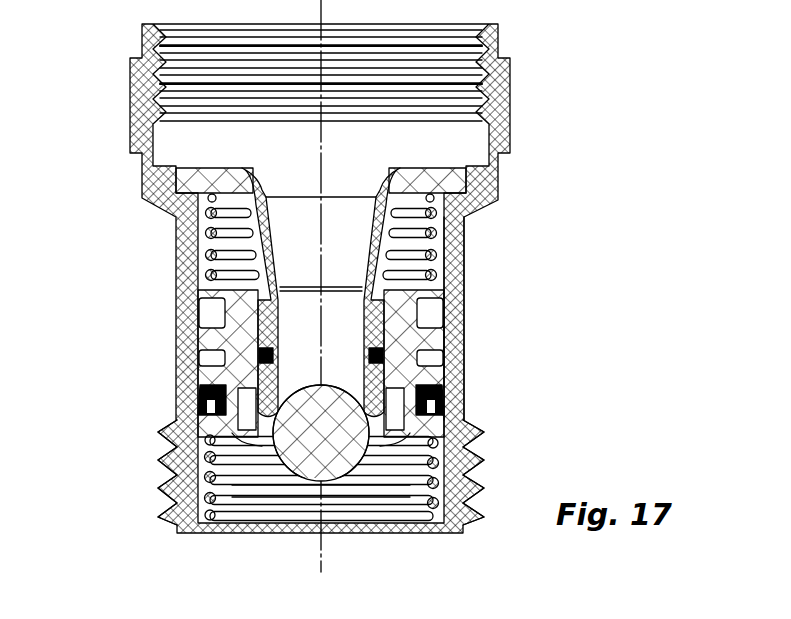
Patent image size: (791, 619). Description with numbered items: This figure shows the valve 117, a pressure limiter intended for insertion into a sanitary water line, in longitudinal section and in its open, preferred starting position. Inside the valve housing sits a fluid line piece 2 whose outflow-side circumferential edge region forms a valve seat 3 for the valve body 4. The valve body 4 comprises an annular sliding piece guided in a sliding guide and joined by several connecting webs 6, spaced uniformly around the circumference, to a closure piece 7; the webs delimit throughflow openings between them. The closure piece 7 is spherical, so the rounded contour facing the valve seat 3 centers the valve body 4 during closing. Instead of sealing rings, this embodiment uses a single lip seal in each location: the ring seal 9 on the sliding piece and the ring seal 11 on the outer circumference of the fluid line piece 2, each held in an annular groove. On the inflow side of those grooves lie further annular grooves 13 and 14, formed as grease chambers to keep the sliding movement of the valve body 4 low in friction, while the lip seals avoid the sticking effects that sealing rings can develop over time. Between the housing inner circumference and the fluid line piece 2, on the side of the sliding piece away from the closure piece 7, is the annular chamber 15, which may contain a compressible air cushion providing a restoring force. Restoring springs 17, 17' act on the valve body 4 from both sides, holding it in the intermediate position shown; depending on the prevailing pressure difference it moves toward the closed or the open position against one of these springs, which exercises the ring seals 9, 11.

The valve 117 is at (575, 147).
The fluid line piece 2 is at (383, 239).
The annular chamber 15 is at (464, 218).
The restoring spring 17 is at (493, 318).
The restoring spring 17' is at (374, 450).
The ring seal 11 is at (453, 333).
The annular groove 14 is at (396, 349).
The annular groove 13 is at (282, 334).
The ring seal 9 is at (460, 377).
The valve seat 3 is at (232, 433).
The connecting webs 6 is at (232, 462).
The valve body 4 is at (298, 458).
The closure piece 7 is at (342, 490).